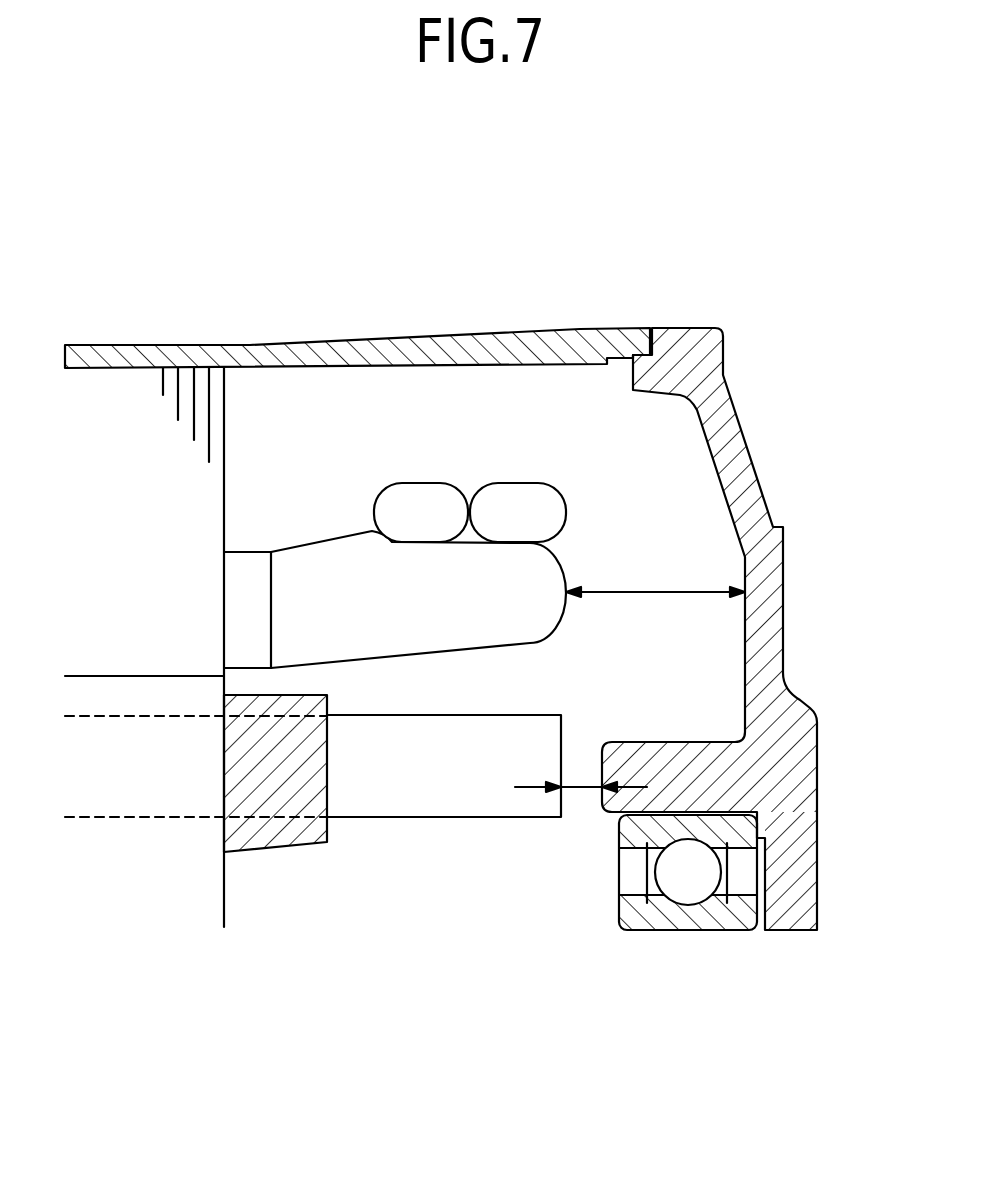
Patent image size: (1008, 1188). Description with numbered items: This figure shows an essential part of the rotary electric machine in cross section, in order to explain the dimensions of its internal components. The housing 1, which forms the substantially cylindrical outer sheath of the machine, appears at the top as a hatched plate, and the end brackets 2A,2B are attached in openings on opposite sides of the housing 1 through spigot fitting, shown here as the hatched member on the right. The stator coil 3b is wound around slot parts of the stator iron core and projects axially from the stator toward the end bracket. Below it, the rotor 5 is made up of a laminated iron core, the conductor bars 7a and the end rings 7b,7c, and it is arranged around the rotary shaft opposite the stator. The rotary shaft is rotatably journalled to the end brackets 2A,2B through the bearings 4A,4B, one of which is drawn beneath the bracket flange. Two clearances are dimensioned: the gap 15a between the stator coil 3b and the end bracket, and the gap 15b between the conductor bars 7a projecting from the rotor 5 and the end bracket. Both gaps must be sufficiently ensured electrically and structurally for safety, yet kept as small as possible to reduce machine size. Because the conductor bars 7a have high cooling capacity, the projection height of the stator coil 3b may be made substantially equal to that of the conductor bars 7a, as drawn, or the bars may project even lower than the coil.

The housing 1 is at (120, 350).
The end brackets 2A,2B is at (700, 373).
The stator coil 3b is at (343, 561).
The bearings 4A,4B is at (688, 893).
The rotor 5 is at (142, 897).
The conductor bars 7a is at (478, 798).
The end rings 7b,7c is at (283, 842).
The gap 15a is at (655, 571).
The gap 15b is at (583, 787).